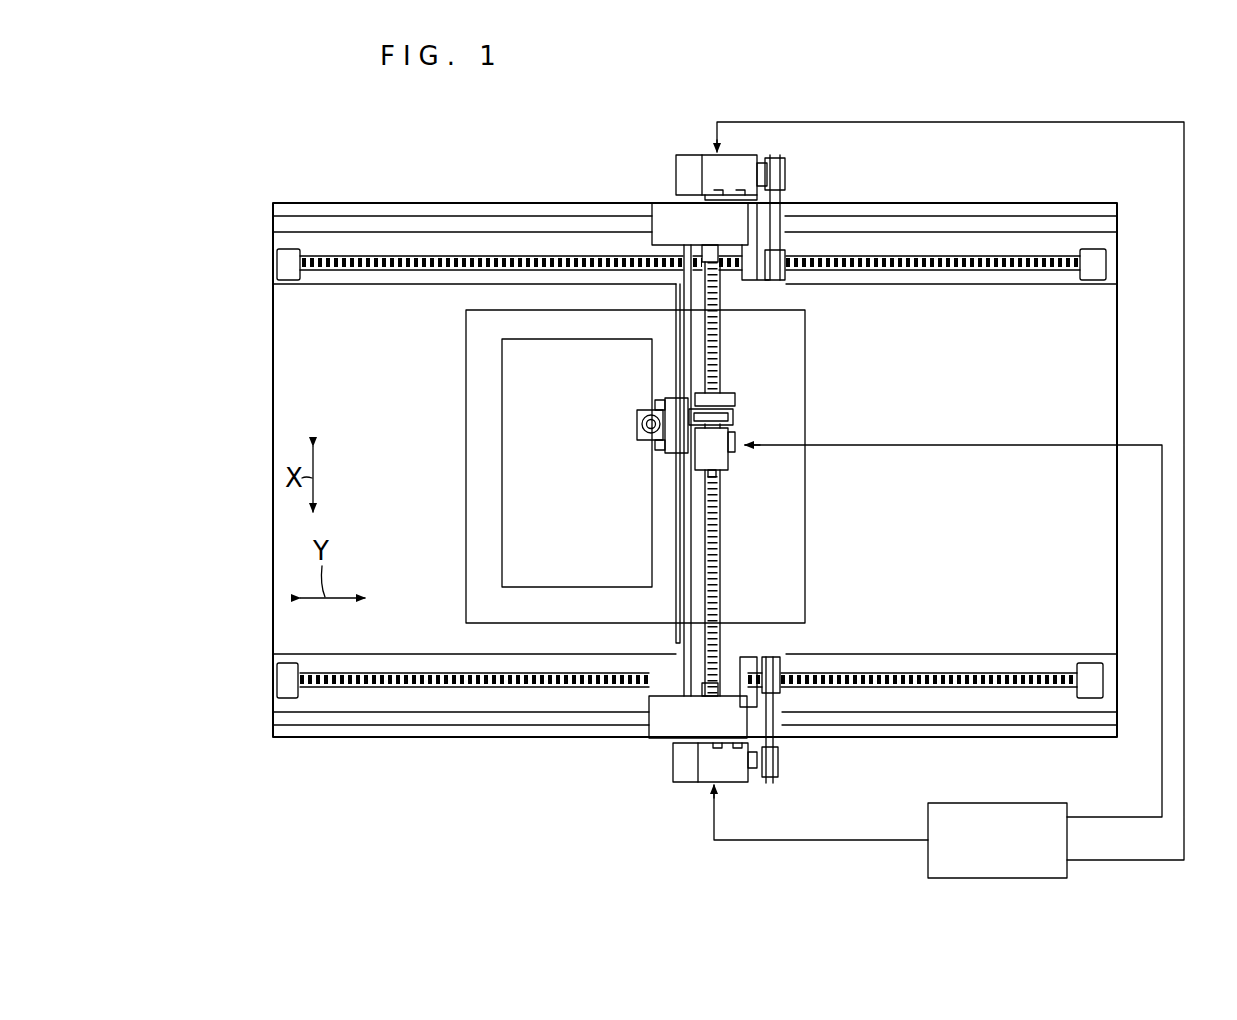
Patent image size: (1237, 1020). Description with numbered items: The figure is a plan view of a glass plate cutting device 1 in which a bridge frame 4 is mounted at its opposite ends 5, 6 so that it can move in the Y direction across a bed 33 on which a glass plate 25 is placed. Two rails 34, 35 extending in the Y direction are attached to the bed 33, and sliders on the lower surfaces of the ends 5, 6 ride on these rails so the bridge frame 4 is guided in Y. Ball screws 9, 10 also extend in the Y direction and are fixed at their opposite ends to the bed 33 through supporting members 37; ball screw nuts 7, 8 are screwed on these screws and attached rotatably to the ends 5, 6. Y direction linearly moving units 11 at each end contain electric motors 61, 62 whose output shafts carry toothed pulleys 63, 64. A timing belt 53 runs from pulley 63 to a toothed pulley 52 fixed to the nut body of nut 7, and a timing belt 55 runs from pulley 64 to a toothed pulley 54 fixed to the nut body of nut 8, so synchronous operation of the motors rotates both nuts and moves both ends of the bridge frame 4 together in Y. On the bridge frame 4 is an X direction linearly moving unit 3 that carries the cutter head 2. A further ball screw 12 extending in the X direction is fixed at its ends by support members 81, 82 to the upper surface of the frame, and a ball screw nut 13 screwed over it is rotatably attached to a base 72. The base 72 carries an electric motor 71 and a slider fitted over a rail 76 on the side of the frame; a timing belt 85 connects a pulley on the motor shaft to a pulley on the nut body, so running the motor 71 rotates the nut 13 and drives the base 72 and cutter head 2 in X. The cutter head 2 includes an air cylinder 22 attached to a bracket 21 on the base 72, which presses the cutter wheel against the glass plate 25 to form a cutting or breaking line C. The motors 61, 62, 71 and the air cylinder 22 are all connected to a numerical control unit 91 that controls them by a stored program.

The glass plate cutting device 1 is at (866, 112).
The cutter head 2 is at (642, 440).
The X direction linearly moving unit 3 is at (737, 437).
The bridge frame 4 is at (692, 545).
The end of bridge frame 5 is at (660, 730).
The end of bridge frame 6 is at (672, 216).
The ball screw nut 7 is at (758, 655).
The ball screw nut 8 is at (762, 280).
The ball screw 9 is at (508, 688).
The ball screw 10 is at (480, 254).
The Y direction linearly moving units 11 is at (686, 150).
The ball screw 12 is at (718, 350).
The ball screw nut 13 is at (733, 398).
The bracket 21 is at (657, 446).
The air cylinder 22 is at (638, 424).
The glass plate 25 is at (466, 487).
The bed 33 is at (273, 340).
The rail 34 is at (372, 724).
The rail 35 is at (336, 216).
The supporting members 37 is at (288, 264).
The toothed pulley 52 is at (782, 668).
The timing belt 53 is at (770, 780).
The toothed pulley 54 is at (785, 268).
The timing belt 55 is at (774, 160).
The electric motor 61 is at (727, 770).
The electric motor 62 is at (683, 170).
The toothed pulley 63 is at (778, 762).
The toothed pulley 64 is at (787, 172).
The electric motor 71 is at (718, 456).
The base 72 is at (677, 398).
The rail 76 is at (676, 597).
The support member 81 is at (707, 690).
The support member 82 is at (707, 253).
The timing belt 85 is at (733, 416).
The numerical control unit 91 is at (928, 822).
The cutting or breaking line C is at (502, 418).